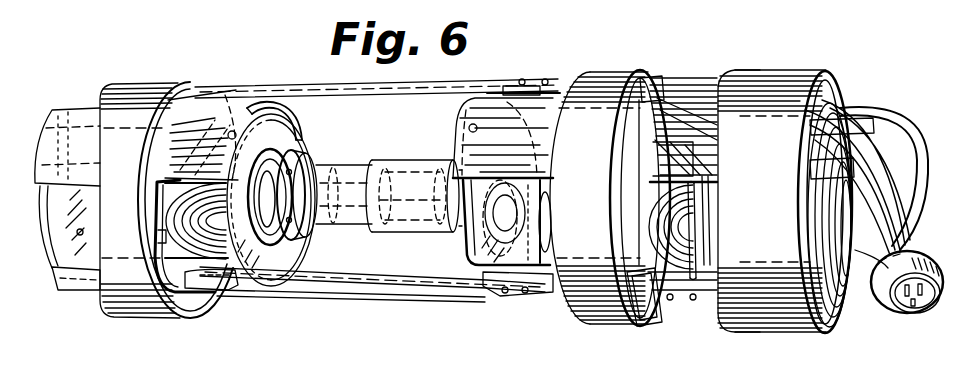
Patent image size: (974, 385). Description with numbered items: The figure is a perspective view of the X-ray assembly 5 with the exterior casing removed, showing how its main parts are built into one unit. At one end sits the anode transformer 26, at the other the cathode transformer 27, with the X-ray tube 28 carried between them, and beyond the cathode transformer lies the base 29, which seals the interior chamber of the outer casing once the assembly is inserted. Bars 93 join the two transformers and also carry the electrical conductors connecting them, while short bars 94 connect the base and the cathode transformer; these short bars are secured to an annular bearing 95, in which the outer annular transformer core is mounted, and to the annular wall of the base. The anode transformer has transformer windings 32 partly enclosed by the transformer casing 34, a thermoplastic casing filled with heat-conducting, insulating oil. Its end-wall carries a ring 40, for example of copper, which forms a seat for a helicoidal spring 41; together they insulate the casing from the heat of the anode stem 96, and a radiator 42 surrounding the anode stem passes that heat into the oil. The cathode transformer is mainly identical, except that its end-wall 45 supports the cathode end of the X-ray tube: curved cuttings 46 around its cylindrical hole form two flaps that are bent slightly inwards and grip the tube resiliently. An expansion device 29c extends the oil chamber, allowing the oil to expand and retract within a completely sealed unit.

The X-ray assembly 5 is at (552, 296).
The anode transformer 26 is at (158, 308).
The cathode transformer 27 is at (538, 113).
The X-ray tube 28 is at (388, 167).
The base 29 is at (778, 310).
The expansion device 29c is at (862, 300).
The transformer windings 32 is at (233, 287).
The transformer casing 34 is at (250, 128).
The ring 40 is at (316, 253).
The helicoidal spring 41 is at (295, 150).
The radiator 42 is at (310, 158).
The end-wall 45 is at (478, 247).
The curved cuttings 46 is at (516, 221).
The bars 93 is at (475, 88).
The short bars 94 is at (700, 297).
The annular bearing 95 is at (150, 97).
The anode stem 96 is at (388, 213).